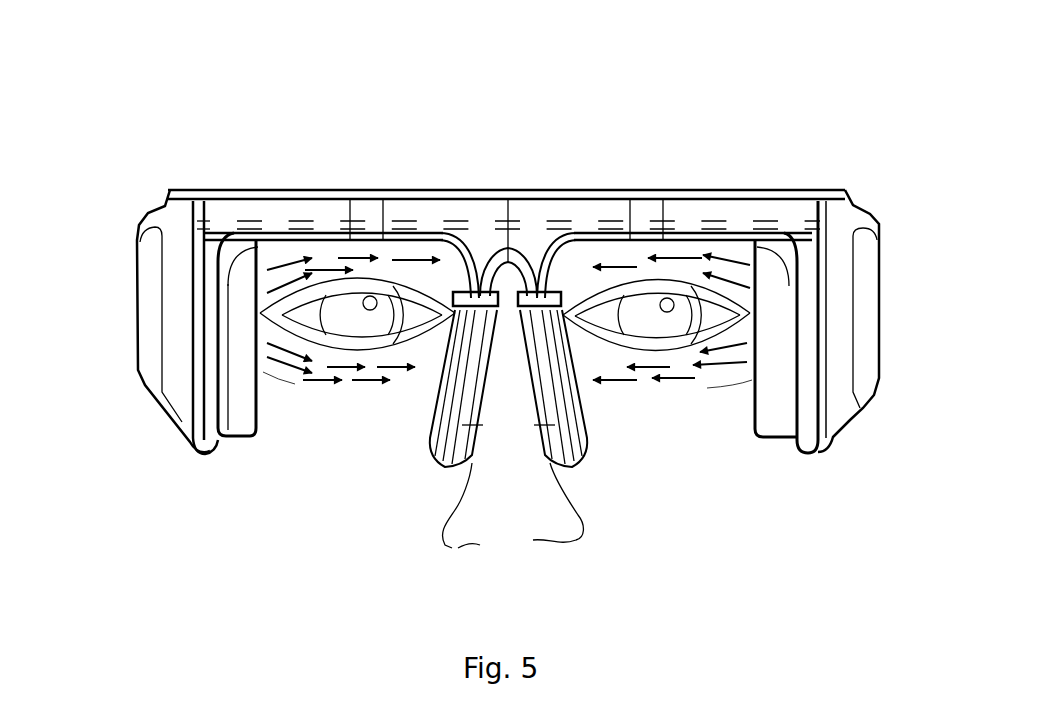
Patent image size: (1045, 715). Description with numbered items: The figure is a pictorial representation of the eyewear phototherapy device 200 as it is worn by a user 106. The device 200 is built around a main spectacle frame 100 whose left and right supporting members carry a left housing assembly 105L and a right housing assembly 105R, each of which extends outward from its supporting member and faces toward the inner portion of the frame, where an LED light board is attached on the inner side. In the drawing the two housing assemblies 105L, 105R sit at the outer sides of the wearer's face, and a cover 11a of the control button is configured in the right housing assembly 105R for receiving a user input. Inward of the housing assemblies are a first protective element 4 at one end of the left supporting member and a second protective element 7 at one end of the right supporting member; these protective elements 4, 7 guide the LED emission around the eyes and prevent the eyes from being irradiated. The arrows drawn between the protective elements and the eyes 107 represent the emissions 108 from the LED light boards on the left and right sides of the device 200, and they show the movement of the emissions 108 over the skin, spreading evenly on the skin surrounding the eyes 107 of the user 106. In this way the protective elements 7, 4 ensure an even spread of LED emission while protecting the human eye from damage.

The eyewear phototherapy device 200 is at (555, 92).
The main spectacle frame 100 is at (547, 185).
The eyes 107 is at (360, 297).
The emissions 108 is at (347, 393).
The cover 11a is at (137, 270).
The right housing assembly 105R is at (147, 347).
The left housing assembly 105L is at (867, 327).
The second protective element 7 is at (250, 427).
The first protective element 4 is at (773, 428).
The user 106 is at (345, 505).